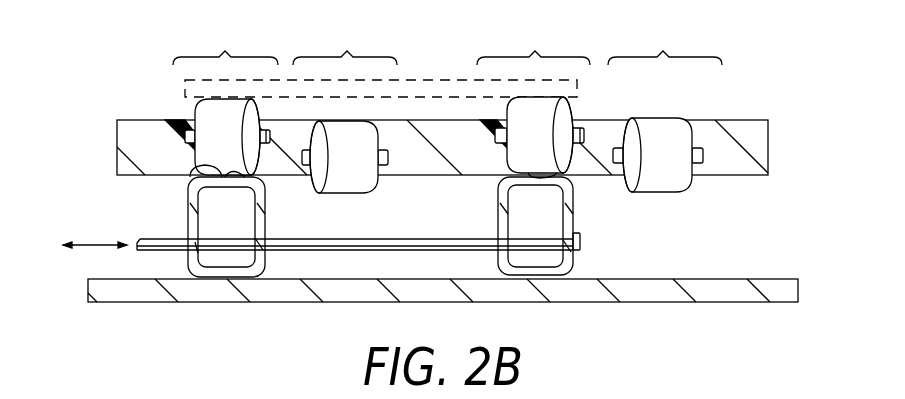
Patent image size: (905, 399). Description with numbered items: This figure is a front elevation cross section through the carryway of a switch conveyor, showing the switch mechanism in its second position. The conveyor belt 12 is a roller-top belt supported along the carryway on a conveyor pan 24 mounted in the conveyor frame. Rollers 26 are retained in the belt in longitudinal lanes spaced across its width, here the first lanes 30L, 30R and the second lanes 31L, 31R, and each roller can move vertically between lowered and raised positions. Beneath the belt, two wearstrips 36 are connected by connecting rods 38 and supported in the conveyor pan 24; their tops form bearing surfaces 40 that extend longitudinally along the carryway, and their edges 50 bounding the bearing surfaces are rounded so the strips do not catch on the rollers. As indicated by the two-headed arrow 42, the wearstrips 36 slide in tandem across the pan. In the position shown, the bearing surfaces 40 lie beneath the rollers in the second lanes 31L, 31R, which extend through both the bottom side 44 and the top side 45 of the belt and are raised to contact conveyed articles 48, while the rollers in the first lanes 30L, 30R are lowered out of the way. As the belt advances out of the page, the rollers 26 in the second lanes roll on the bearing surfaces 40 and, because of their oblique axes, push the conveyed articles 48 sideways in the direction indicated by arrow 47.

The conveyor belt 12 is at (117, 160).
The conveyor pan 24 is at (720, 291).
The rollers 26 is at (657, 123).
The first lane 30L is at (665, 97).
The first lane 30R is at (345, 98).
The second lane 31L is at (533, 88).
The second lane 31R is at (225, 89).
The wearstrips 36 is at (573, 212).
The connecting rods 38 is at (398, 239).
The bearing surfaces 40 is at (192, 176).
The two-headed arrow 42 is at (102, 243).
The bottom side 44 is at (735, 175).
The top side 45 is at (730, 119).
The arrow 47 is at (180, 93).
The conveyed articles 48 is at (418, 82).
The edges 50 is at (266, 184).